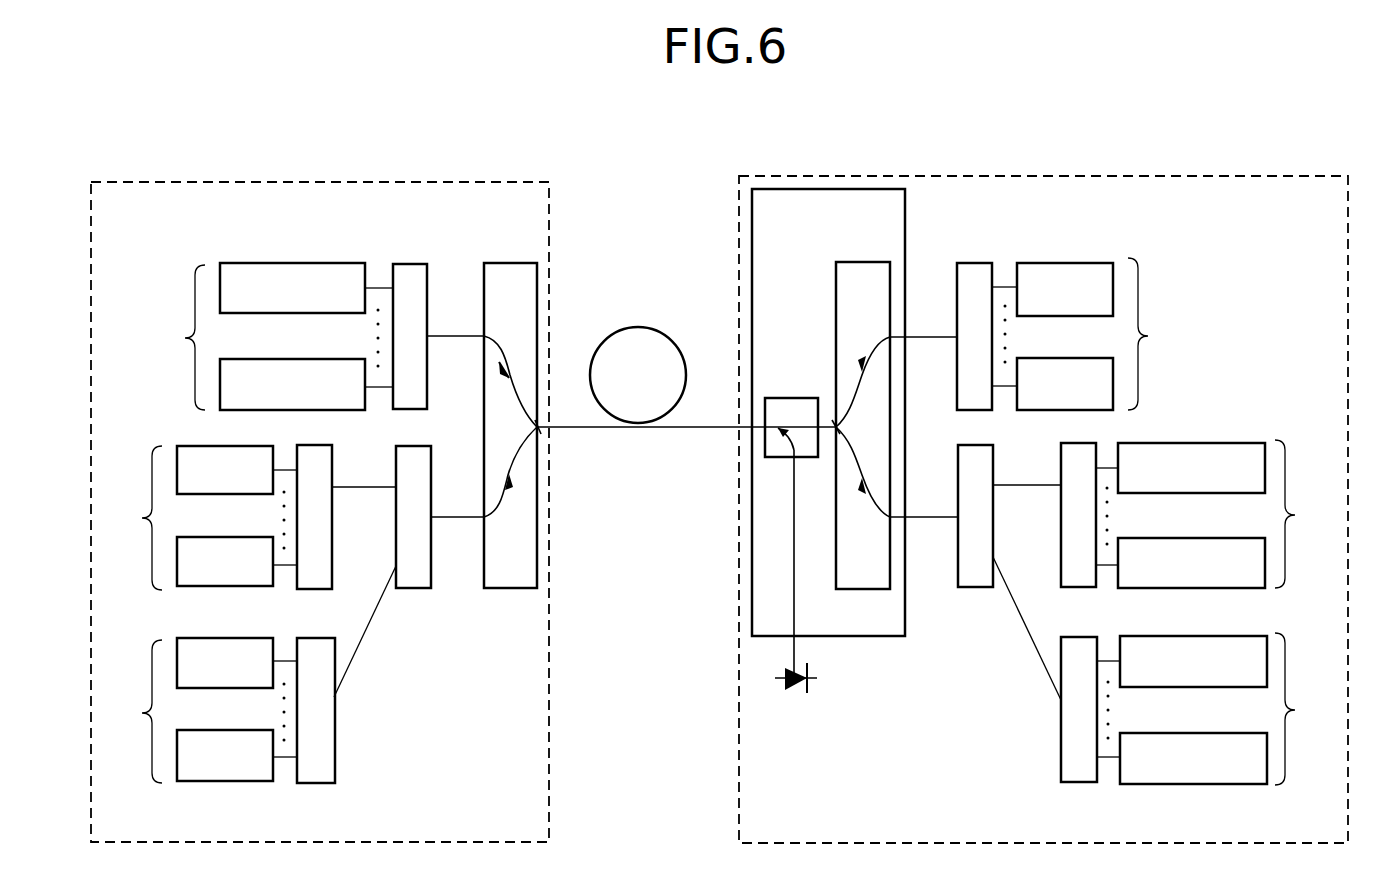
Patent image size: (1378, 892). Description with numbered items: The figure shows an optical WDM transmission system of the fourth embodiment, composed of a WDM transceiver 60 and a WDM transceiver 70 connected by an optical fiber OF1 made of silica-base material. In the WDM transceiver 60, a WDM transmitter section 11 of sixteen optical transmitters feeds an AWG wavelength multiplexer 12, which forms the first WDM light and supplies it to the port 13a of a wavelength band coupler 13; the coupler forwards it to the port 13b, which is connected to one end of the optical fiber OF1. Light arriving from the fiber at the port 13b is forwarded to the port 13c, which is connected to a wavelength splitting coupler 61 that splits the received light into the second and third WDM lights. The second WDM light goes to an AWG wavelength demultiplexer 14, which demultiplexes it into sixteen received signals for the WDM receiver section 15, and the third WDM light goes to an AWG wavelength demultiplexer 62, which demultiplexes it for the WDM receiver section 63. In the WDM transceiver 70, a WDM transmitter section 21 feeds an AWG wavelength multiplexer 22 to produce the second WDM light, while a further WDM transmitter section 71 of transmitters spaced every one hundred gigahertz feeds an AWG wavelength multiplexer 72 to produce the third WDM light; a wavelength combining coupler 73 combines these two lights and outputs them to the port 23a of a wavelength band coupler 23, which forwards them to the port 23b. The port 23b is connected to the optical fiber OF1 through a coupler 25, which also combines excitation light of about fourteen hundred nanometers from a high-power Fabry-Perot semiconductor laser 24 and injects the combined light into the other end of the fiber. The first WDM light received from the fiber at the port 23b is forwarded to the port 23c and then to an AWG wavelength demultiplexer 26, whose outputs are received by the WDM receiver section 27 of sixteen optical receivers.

The WDM transceiver 60 is at (330, 182).
The WDM transceiver 70 is at (1060, 176).
The WDM transmitter section 11 is at (257, 336).
The AWG wavelength multiplexer 12 is at (413, 264).
The wavelength band coupler 13 is at (508, 263).
The port 13a is at (484, 336).
The port 13b is at (540, 430).
The port 13c is at (484, 517).
The AWG wavelength demultiplexer 62 is at (318, 445).
The wavelength splitting coupler 61 is at (413, 589).
The WDM receiver section 63 is at (186, 518).
The WDM receiver section 15 is at (188, 710).
The AWG wavelength demultiplexer 14 is at (335, 750).
The optical fiber OF1 is at (638, 327).
The wavelength band coupler 23 is at (862, 262).
The port 23a is at (890, 520).
The port 23b is at (833, 410).
The port 23c is at (890, 337).
The coupler 25 is at (792, 398).
The semiconductor laser 24 is at (790, 690).
The AWG wavelength demultiplexer 26 is at (978, 262).
The WDM receiver section 27 is at (1103, 334).
The AWG wavelength multiplexer 72 is at (1062, 443).
The WDM transmitter section 71 is at (1225, 514).
The wavelength combining coupler 73 is at (975, 588).
The AWG wavelength multiplexer 22 is at (1060, 748).
The WDM transmitter section 21 is at (1226, 709).